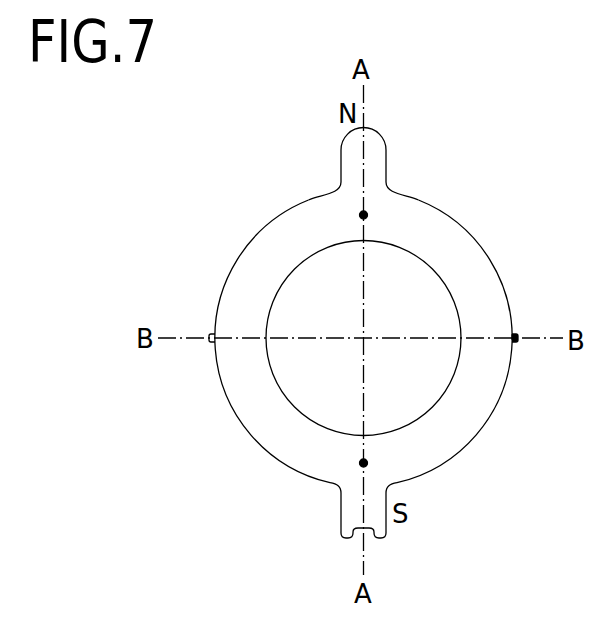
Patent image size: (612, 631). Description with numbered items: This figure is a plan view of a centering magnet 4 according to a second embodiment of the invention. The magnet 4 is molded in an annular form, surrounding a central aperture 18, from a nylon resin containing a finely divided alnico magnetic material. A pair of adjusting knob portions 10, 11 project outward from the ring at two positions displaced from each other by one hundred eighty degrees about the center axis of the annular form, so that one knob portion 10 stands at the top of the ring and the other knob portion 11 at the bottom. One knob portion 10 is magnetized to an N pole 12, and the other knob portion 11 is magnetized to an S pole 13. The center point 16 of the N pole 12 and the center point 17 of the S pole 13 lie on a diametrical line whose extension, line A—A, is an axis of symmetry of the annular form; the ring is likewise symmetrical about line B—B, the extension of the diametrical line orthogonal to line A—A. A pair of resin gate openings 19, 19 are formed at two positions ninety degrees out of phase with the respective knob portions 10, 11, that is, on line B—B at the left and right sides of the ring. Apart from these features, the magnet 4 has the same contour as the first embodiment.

The centering magnet 4 is at (375, 335).
The adjusting knob portion 10 is at (376, 150).
The adjusting knob portion 11 is at (345, 520).
The N pole 12 is at (337, 212).
The S pole 13 is at (337, 470).
The center point of the N pole 16 is at (364, 215).
The center point of the S pole 17 is at (364, 463).
The central aperture 18 is at (420, 308).
The resin gate opening 19 is at (210, 345).